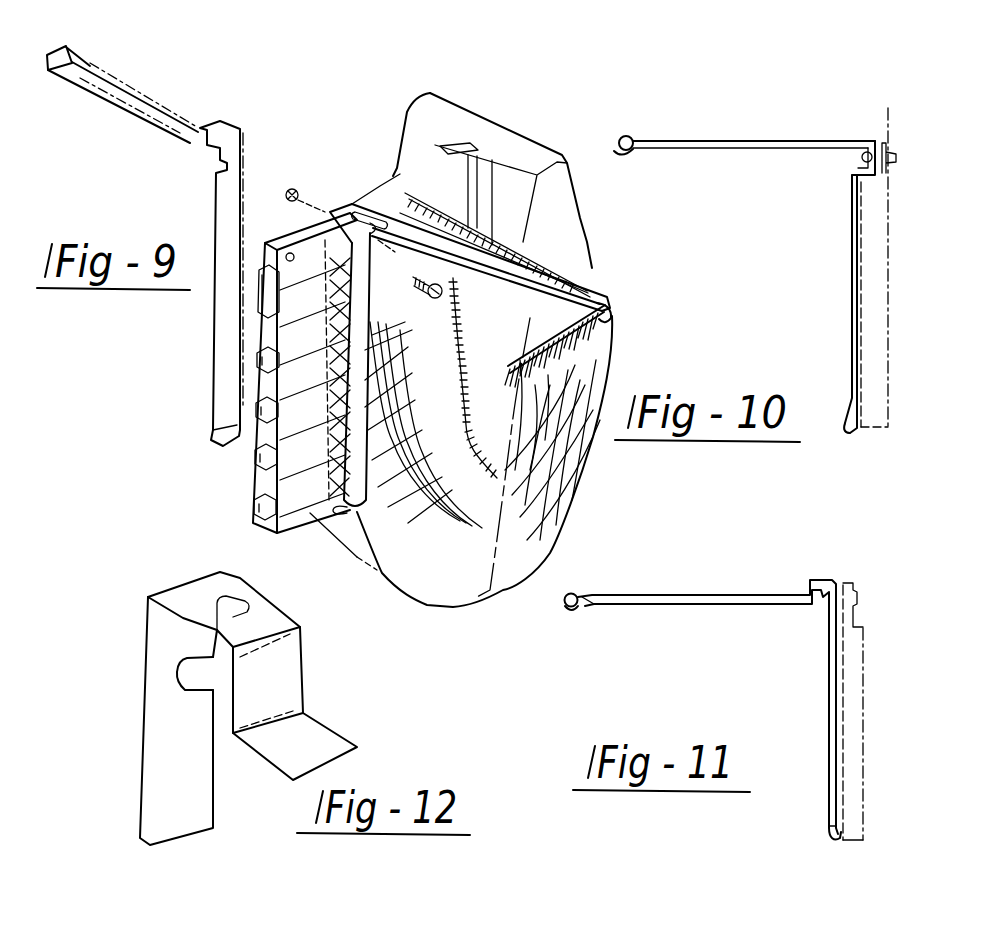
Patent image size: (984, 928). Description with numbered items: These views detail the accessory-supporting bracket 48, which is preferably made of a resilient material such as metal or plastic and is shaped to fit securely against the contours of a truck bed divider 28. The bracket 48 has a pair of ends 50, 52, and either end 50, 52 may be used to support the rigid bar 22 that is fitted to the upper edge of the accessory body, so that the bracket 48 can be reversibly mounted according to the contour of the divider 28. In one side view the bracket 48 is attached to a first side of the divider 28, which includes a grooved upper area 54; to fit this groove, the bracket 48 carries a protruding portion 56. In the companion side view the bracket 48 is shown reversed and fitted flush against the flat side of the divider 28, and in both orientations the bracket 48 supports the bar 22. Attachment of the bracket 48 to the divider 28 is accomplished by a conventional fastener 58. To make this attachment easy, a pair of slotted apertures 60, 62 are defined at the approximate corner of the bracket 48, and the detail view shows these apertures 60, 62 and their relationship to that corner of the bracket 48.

In FIG. 9, the rigid bar 22 is at (614, 310).
In FIG. 10, the rigid bar 22 is at (633, 139).
In FIG. 11, the rigid bar 22 is at (582, 598).
In FIG. 9, the divider 28 is at (443, 160).
In FIG. 10, the divider 28 is at (889, 125).
In FIG. 11, the divider 28 is at (862, 642).
In FIG. 9, the supporting bracket 48 is at (135, 90).
In FIG. 10, the supporting bracket 48 is at (851, 277).
In FIG. 11, the supporting bracket 48 is at (760, 607).
In FIG. 12, the supporting bracket 48 is at (318, 744).
In FIG. 9, the end 50 is at (588, 293).
In FIG. 10, the end 50 is at (636, 152).
In FIG. 11, the end 50 is at (828, 834).
In FIG. 9, the end 52 is at (360, 515).
In FIG. 10, the end 52 is at (842, 440).
In FIG. 11, the end 52 is at (575, 613).
In FIG. 9, the grooved upper area 54 is at (307, 247).
In FIG. 10, the grooved upper area 54 is at (873, 141).
In FIG. 10, the protruding portion 56 is at (853, 172).
In FIG. 9, the fastener 58 is at (430, 300).
In FIG. 9, the slotted aperture 60 is at (362, 220).
In FIG. 12, the slotted aperture 60 is at (218, 608).
In FIG. 9, the slotted aperture 62 is at (372, 228).
In FIG. 12, the slotted aperture 62 is at (185, 665).